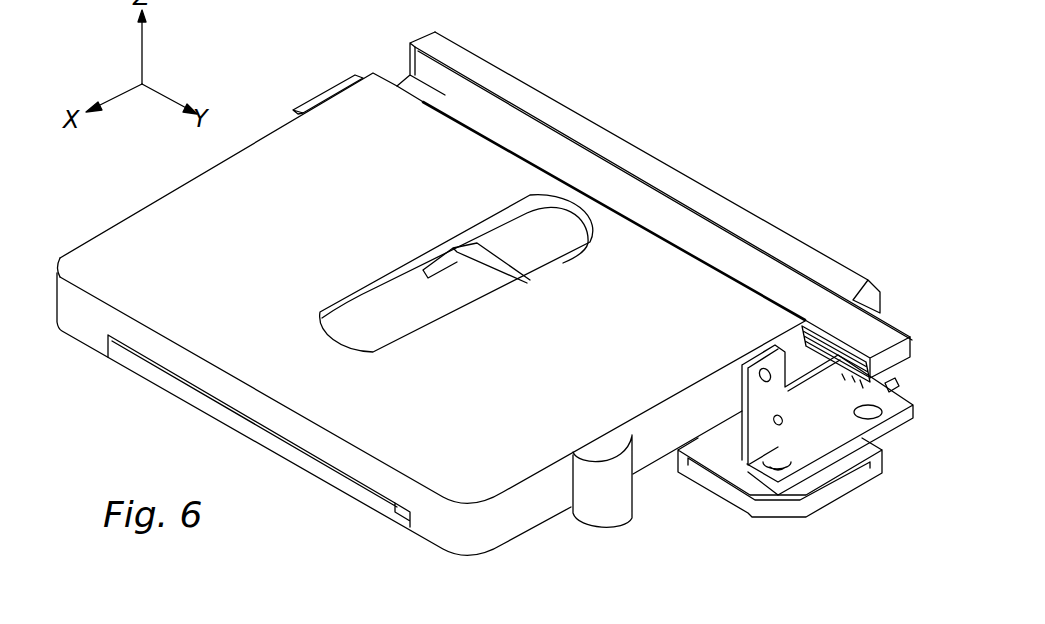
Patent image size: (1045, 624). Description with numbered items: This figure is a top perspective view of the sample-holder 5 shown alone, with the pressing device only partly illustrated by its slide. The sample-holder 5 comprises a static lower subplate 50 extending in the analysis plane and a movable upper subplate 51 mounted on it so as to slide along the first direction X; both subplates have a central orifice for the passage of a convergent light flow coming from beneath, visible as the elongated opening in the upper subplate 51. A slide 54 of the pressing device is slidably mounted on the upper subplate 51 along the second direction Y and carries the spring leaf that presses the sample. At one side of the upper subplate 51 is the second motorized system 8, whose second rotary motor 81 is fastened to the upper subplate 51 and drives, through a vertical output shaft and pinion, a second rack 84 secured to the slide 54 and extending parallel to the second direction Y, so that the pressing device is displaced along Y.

The sample-holder 5 is at (93, 213).
The upper subplate 51 is at (177, 211).
The lower subplate 50 is at (206, 402).
The slide 54 is at (693, 233).
The second motorized system 8 is at (768, 527).
The second rotary motor 81 is at (843, 474).
The second rack 84 is at (864, 380).